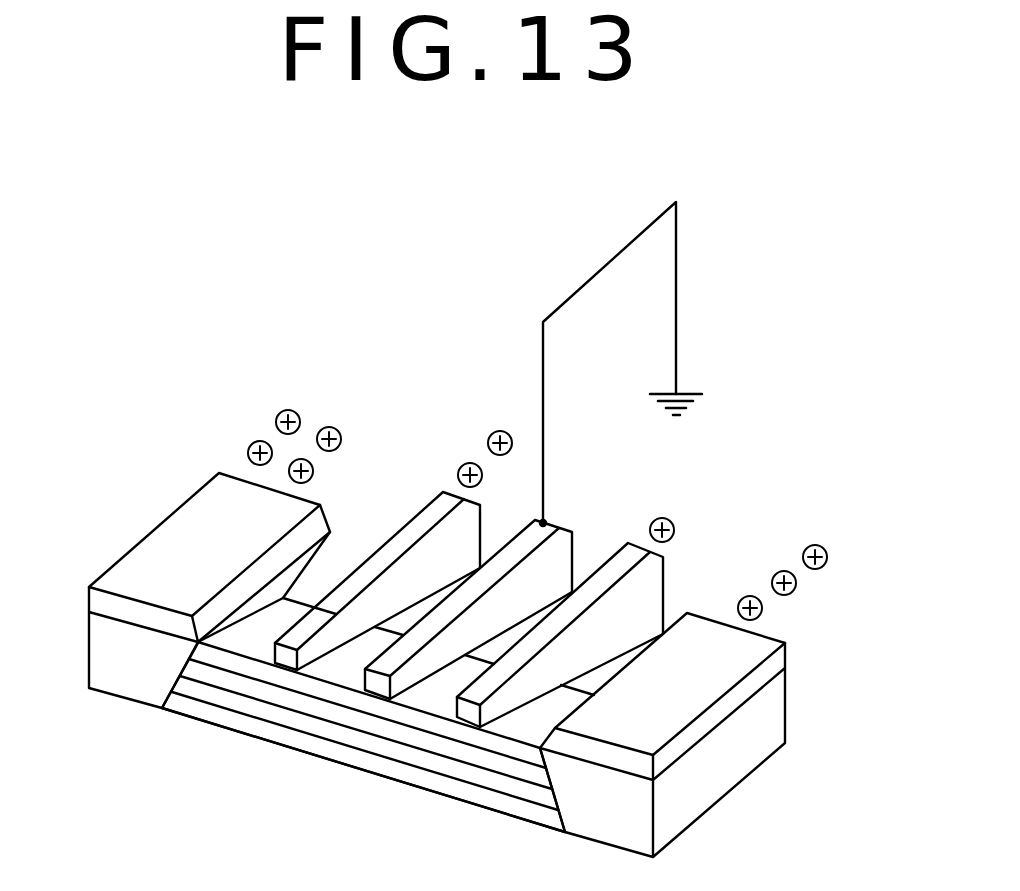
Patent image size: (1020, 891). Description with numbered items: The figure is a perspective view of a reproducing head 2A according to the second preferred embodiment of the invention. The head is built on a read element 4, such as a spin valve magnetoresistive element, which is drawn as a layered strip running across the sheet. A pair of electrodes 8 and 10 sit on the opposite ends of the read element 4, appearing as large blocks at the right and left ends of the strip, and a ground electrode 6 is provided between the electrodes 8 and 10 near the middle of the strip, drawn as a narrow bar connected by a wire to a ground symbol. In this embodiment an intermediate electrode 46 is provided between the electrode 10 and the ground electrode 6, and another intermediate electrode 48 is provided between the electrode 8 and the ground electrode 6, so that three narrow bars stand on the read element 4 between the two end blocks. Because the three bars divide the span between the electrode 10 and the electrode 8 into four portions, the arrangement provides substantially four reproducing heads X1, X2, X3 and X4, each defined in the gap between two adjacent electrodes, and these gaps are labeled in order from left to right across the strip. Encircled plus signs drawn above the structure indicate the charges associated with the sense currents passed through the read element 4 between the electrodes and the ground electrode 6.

The reproducing head 2A is at (272, 753).
The read element 4 is at (405, 783).
The electrode 10 is at (162, 548).
The electrode 8 is at (707, 687).
The intermediate electrode 46 is at (445, 492).
The ground electrode 6 is at (560, 528).
The intermediate electrode 48 is at (663, 557).
The reproducing head X1 is at (402, 471).
The reproducing head X2 is at (515, 501).
The reproducing head X3 is at (602, 533).
The reproducing head X4 is at (712, 574).